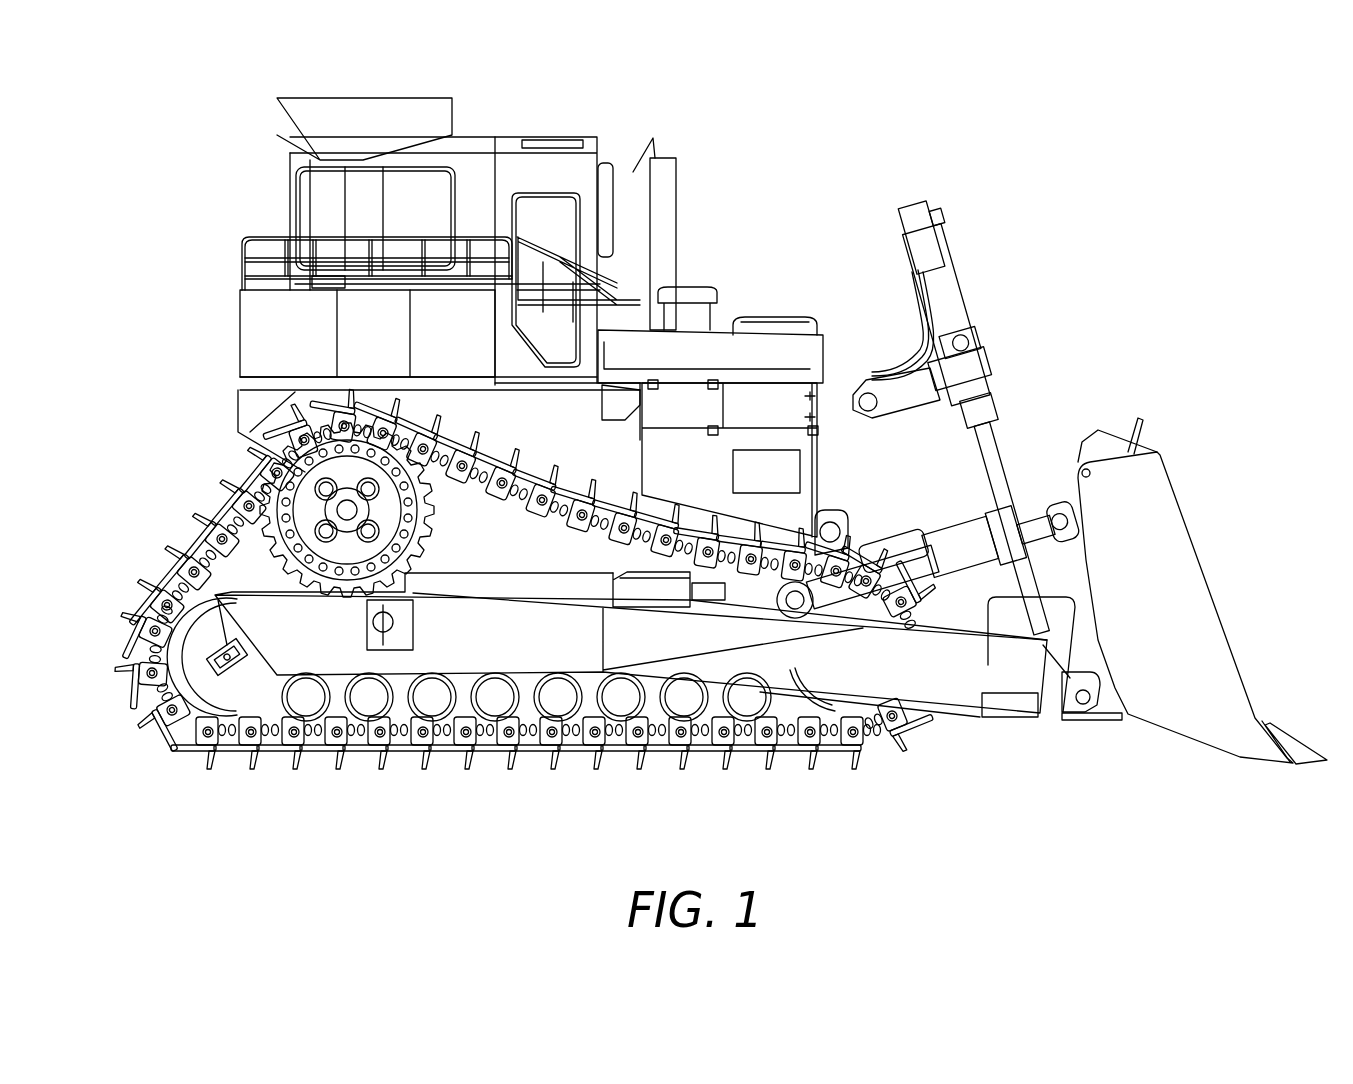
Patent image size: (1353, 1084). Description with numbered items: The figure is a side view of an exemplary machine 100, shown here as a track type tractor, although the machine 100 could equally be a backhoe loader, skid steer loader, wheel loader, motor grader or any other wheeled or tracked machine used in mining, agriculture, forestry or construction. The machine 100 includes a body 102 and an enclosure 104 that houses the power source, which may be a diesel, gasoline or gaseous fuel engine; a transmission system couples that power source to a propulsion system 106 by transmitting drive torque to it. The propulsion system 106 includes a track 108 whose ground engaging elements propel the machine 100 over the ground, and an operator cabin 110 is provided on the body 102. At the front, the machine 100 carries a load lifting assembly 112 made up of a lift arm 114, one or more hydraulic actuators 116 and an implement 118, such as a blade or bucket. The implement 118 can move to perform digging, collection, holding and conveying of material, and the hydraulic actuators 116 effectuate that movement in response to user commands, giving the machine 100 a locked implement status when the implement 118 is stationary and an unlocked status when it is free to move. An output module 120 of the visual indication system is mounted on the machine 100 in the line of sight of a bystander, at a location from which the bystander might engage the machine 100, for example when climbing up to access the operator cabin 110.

The machine 100 is at (1031, 199).
The body 102 is at (260, 428).
The enclosure 104 is at (722, 326).
The propulsion system 106 is at (313, 498).
The track 108 is at (235, 755).
The operator cabin 110 is at (540, 170).
The load lifting assembly 112 is at (1061, 417).
The lift arm 114 is at (858, 670).
The hydraulic actuators 116 is at (1000, 432).
The implement 118 is at (1162, 612).
The output module 120 is at (783, 483).